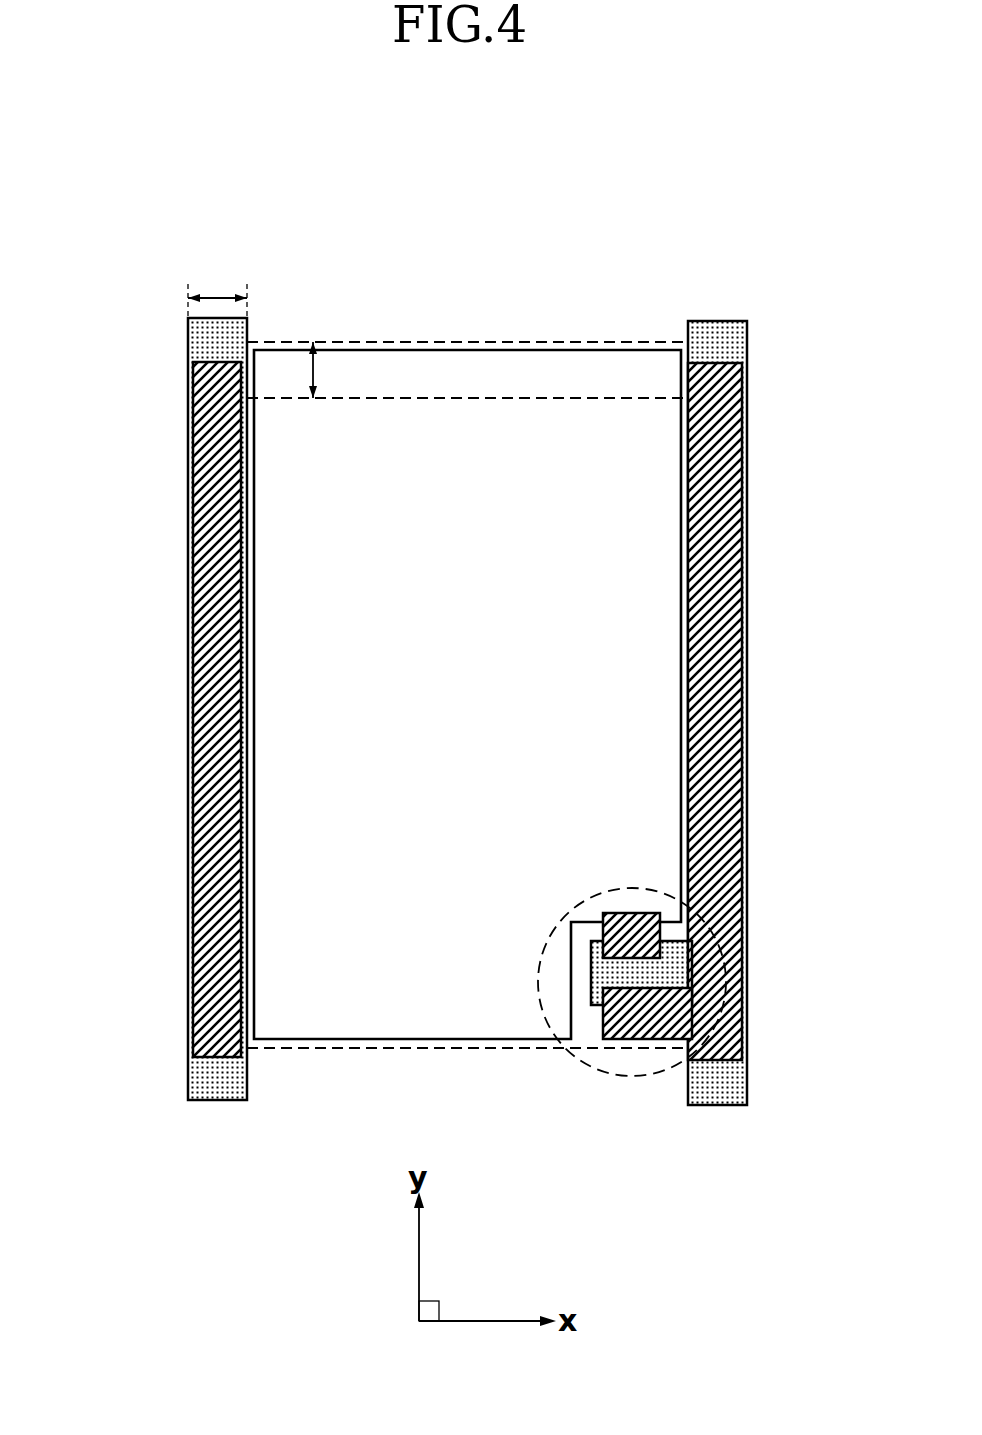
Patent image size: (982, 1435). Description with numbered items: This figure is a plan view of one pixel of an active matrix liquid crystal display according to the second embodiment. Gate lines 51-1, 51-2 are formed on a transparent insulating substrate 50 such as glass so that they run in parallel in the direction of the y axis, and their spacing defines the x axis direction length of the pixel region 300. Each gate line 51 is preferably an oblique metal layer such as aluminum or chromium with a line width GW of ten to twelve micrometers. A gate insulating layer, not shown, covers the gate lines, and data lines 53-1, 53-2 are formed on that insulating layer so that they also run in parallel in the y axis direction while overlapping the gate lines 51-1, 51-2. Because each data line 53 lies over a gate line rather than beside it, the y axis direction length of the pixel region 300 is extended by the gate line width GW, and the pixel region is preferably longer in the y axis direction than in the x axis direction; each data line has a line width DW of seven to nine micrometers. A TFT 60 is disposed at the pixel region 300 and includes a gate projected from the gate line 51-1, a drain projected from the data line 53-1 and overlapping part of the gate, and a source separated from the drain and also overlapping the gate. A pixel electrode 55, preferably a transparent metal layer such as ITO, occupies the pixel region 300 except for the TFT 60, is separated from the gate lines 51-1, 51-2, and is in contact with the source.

The transparent insulating substrate 50 is at (467, 252).
The pixel region 300 is at (535, 343).
The gate line 51 is at (657, 973).
The gate line 51-1 is at (733, 1084).
The gate line 51-2 is at (190, 343).
The data line 53 is at (643, 925).
The data line 53-1 is at (747, 704).
The data line 53-2 is at (207, 640).
The pixel electrode 55 is at (663, 620).
The TFT 60 is at (717, 938).